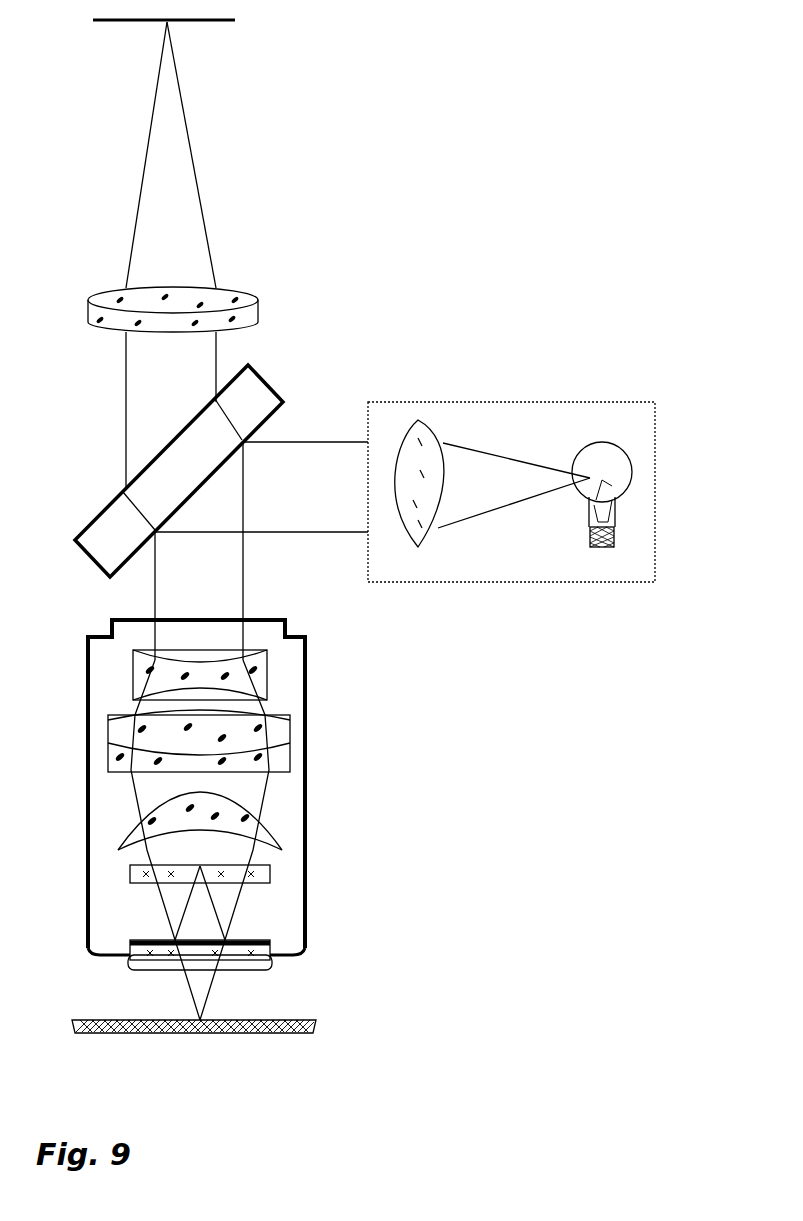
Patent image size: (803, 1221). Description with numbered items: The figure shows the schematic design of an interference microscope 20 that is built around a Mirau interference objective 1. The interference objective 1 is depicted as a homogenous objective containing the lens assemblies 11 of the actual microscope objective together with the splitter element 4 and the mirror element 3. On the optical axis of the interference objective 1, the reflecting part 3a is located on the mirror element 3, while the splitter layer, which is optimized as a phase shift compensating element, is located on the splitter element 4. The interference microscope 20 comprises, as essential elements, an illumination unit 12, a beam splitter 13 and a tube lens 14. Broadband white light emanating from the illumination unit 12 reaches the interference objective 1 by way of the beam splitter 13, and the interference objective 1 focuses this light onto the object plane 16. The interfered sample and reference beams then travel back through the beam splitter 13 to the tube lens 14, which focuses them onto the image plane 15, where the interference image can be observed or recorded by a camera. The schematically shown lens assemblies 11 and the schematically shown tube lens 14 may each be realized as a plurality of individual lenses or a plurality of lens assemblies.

The interference objective 1 is at (308, 898).
The mirror element 3 is at (257, 885).
The reflecting part 3a is at (201, 866).
The splitter element 4 is at (257, 963).
The lens assemblies 11 is at (262, 842).
The illumination unit 12 is at (492, 402).
The beam splitter 13 is at (252, 372).
The tube lens 14 is at (223, 287).
The image plane 15 is at (204, 22).
The object plane 16 is at (298, 1020).
The interference microscope 20 is at (476, 160).